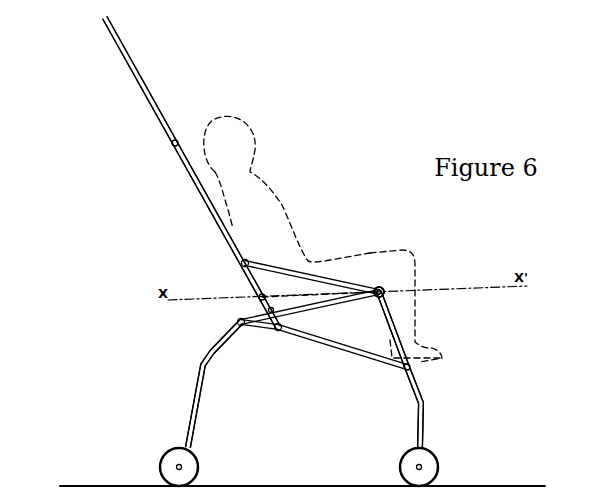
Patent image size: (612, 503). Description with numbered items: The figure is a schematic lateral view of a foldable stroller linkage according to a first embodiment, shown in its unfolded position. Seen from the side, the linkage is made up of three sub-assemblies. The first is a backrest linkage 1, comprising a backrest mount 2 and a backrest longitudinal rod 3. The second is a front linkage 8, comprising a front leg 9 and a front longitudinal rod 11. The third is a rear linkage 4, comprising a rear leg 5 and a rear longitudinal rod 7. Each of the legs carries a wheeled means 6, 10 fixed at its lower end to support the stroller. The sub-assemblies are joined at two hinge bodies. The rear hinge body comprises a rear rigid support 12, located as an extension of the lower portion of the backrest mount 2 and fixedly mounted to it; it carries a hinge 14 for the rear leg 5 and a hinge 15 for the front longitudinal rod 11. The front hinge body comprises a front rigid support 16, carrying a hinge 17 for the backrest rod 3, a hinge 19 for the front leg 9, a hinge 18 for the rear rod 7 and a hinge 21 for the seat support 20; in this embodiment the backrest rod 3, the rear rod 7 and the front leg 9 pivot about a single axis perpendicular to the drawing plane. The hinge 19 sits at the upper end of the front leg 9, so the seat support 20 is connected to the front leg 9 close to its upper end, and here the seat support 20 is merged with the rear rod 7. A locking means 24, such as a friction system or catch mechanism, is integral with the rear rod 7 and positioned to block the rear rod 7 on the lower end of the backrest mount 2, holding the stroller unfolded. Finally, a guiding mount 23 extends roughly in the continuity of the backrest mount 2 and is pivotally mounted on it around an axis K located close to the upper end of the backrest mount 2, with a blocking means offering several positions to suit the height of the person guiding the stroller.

The backrest linkage 1 is at (263, 212).
The backrest mount 2 is at (198, 186).
The backrest longitudinal rod 3 is at (356, 295).
The rear linkage 4 is at (178, 362).
The rear leg 5 is at (197, 388).
The wheeled means 6 is at (161, 457).
The rear longitudinal rod 7 is at (260, 328).
The front linkage 8 is at (436, 375).
The front leg 9 is at (410, 390).
The wheeled means 10 is at (437, 455).
The front longitudinal rod 11 is at (353, 350).
The rear rigid support 12 is at (288, 285).
The hinge 14 is at (258, 294).
The hinge 15 is at (277, 331).
The front rigid support 16 is at (412, 296).
The hinge 17 is at (386, 293).
The hinge 18 is at (379, 292).
The hinge 19 is at (379, 292).
The seat support 20 is at (311, 272).
The hinge 21 is at (379, 292).
The guiding mount 23 is at (110, 37).
The locking means 24 is at (237, 322).
The axis K is at (171, 143).